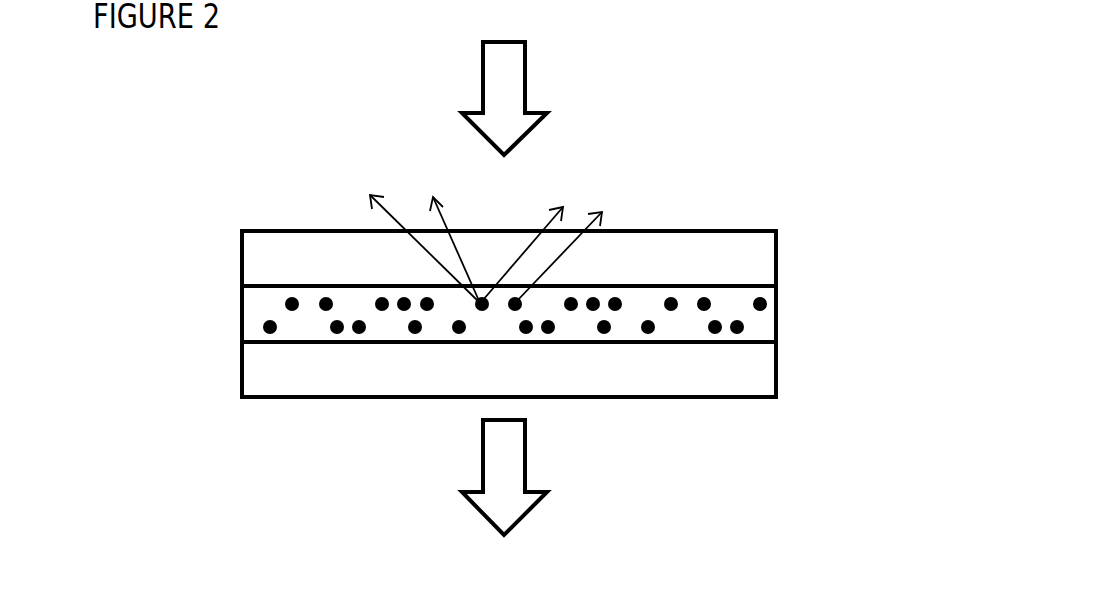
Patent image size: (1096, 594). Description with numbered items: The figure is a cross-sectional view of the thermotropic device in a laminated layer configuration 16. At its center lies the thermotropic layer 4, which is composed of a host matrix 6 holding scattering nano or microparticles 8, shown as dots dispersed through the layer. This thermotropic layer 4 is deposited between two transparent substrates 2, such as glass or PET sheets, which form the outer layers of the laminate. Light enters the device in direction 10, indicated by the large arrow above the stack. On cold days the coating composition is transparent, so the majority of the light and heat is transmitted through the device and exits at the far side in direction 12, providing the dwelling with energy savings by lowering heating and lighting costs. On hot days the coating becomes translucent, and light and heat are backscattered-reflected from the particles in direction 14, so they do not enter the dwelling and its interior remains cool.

The transparent substrates 2 is at (778, 264).
The thermotropic layer 4 is at (641, 300).
The host matrix 6 is at (732, 305).
The scattering nano or microparticles 8 is at (676, 300).
The direction of entering light 10 is at (504, 98).
The direction of transmitted light 12 is at (504, 477).
The direction of backscattered-reflected light 14 is at (486, 241).
The laminated layer configuration 16 is at (320, 221).